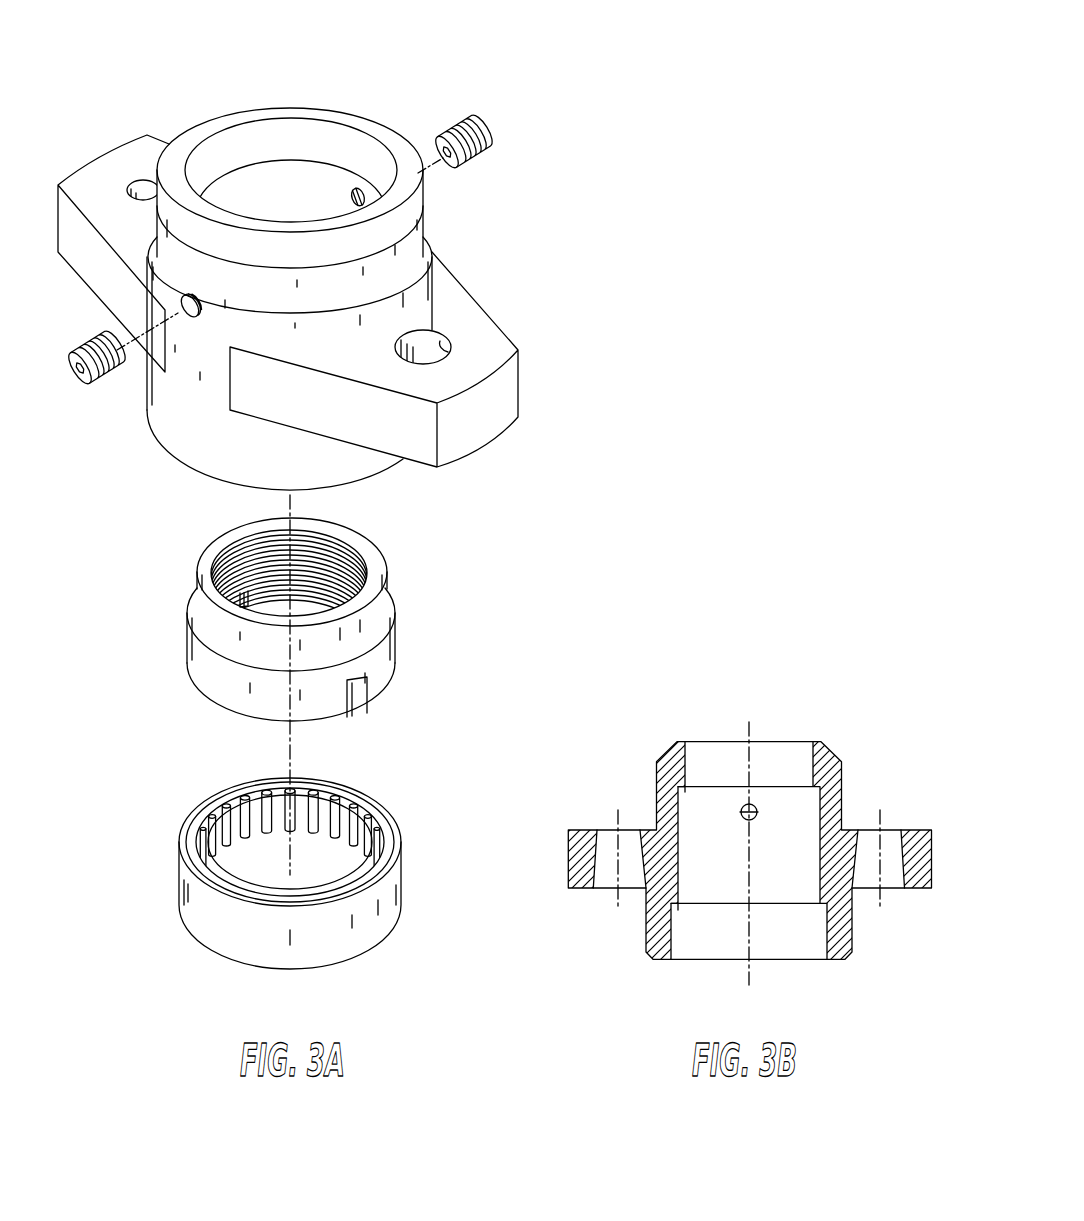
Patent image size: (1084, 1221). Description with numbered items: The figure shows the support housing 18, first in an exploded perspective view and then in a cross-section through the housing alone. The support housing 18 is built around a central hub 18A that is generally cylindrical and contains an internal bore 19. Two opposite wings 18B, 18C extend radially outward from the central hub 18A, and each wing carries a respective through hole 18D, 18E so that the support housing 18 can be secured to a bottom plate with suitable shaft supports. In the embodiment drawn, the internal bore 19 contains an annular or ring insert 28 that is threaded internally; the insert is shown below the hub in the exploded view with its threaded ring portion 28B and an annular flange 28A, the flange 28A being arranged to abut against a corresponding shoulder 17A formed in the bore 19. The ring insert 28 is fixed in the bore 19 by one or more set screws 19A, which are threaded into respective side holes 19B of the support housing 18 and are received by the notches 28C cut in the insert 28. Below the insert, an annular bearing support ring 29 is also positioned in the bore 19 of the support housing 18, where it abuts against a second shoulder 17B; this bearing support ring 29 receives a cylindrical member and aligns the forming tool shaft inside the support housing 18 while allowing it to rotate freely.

In FIG. 3B, the shoulder 17A is at (684, 803).
In FIG. 3B, the shoulder 17B is at (668, 937).
In FIG. 3A, the support housing 18 is at (537, 114).
In FIG. 3B, the support housing 18 is at (749, 853).
In FIG. 3A, the central hub 18A is at (196, 408).
In FIG. 3A, the wing 18B is at (97, 183).
In FIG. 3B, the wing 18B is at (588, 861).
In FIG. 3A, the wing 18C is at (504, 346).
In FIG. 3B, the wing 18C is at (908, 893).
In FIG. 3A, the through hole 18D is at (137, 189).
In FIG. 3B, the through hole 18D is at (602, 838).
In FIG. 3A, the through hole 18E is at (447, 340).
In FIG. 3B, the through hole 18E is at (907, 838).
In FIG. 3A, the internal bore 19 is at (302, 176).
In FIG. 3A, the set screw 19A is at (488, 159).
In FIG. 3A, the side hole 19B is at (365, 192).
In FIG. 3B, the side hole 19B is at (764, 806).
In FIG. 3A, the ring insert 28 is at (420, 585).
In FIG. 3A, the annular flange 28A is at (236, 661).
In FIG. 3A, the threaded nut ring 28B is at (367, 560).
In FIG. 3A, the notch 28C is at (235, 588).
In FIG. 3A, the annular bearing support ring 29 is at (404, 878).